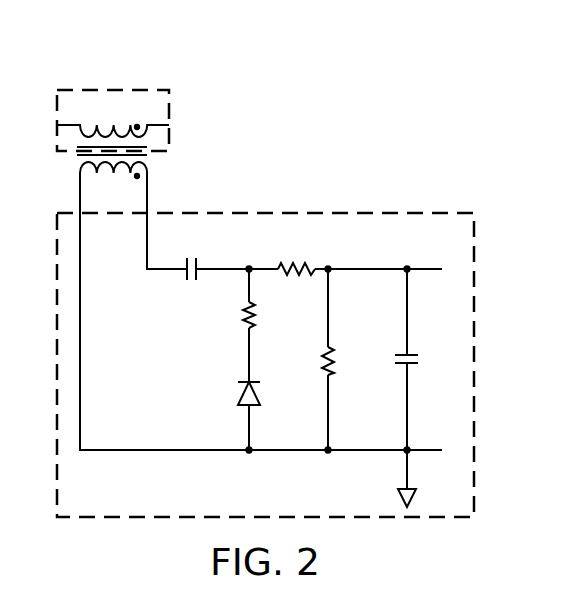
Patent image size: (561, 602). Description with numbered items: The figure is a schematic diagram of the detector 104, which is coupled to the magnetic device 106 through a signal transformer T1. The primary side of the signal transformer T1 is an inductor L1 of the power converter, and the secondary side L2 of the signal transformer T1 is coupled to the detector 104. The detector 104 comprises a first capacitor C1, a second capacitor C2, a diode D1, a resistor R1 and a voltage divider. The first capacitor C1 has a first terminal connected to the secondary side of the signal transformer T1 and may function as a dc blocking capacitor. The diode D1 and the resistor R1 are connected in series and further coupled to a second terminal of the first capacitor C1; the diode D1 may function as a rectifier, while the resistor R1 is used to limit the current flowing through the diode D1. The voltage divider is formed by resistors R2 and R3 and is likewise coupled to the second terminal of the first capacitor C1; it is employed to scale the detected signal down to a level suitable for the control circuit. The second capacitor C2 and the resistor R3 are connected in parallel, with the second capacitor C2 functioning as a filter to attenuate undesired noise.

The detector 104 is at (282, 208).
The magnetic device 106 is at (111, 86).
The signal transformer T1 is at (98, 175).
The inductor L1 is at (113, 120).
The secondary side L2 is at (113, 182).
The first capacitor C1 is at (191, 256).
The second capacitor C2 is at (424, 363).
The resistor R1 is at (265, 316).
The resistor R2 is at (296, 257).
The resistor R3 is at (344, 362).
The diode D1 is at (266, 396).